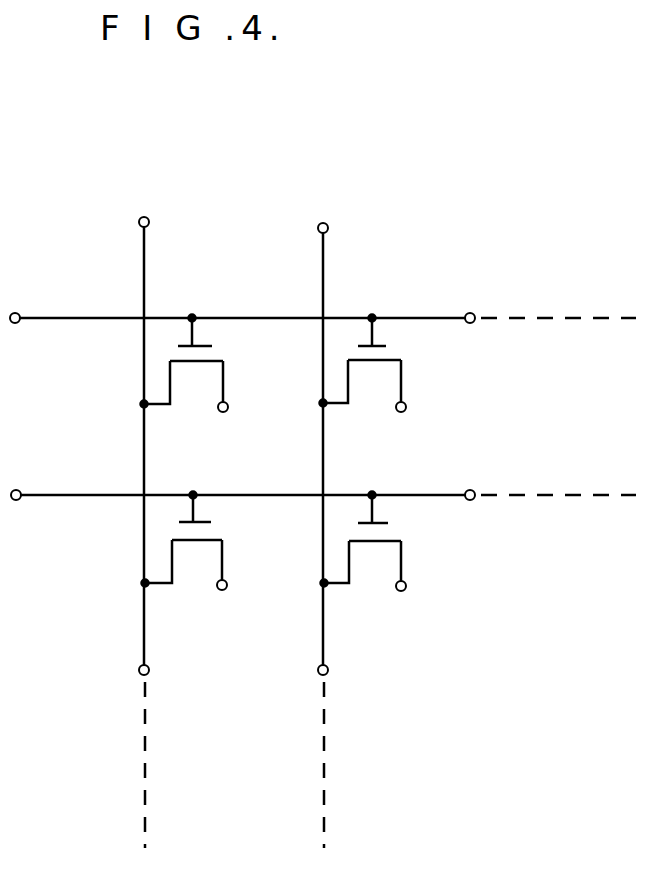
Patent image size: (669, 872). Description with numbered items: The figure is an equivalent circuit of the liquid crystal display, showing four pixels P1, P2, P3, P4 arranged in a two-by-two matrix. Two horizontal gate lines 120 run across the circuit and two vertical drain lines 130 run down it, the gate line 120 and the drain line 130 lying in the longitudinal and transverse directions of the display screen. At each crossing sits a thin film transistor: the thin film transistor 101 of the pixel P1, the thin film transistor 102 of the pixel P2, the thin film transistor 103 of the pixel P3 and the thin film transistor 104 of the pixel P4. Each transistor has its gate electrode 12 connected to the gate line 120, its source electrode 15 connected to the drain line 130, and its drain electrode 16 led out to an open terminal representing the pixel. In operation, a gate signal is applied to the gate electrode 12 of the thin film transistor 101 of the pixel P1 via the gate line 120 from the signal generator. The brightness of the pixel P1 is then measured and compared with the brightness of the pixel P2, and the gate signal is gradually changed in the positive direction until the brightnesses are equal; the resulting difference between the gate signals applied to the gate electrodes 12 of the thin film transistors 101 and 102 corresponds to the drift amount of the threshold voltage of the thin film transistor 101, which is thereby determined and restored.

The drain line 130 is at (148, 232).
The gate line 120 is at (453, 317).
The gate electrode 12 is at (196, 340).
The source electrode 15 is at (170, 378).
The drain electrode 16 is at (226, 388).
The thin film transistor 101 is at (233, 283).
The thin film transistor 102 is at (429, 283).
The thin film transistor 103 is at (240, 705).
The thin film transistor 104 is at (425, 705).
The pixel P1 is at (220, 459).
The pixel P2 is at (458, 456).
The pixel P3 is at (265, 651).
The pixel P4 is at (460, 649).